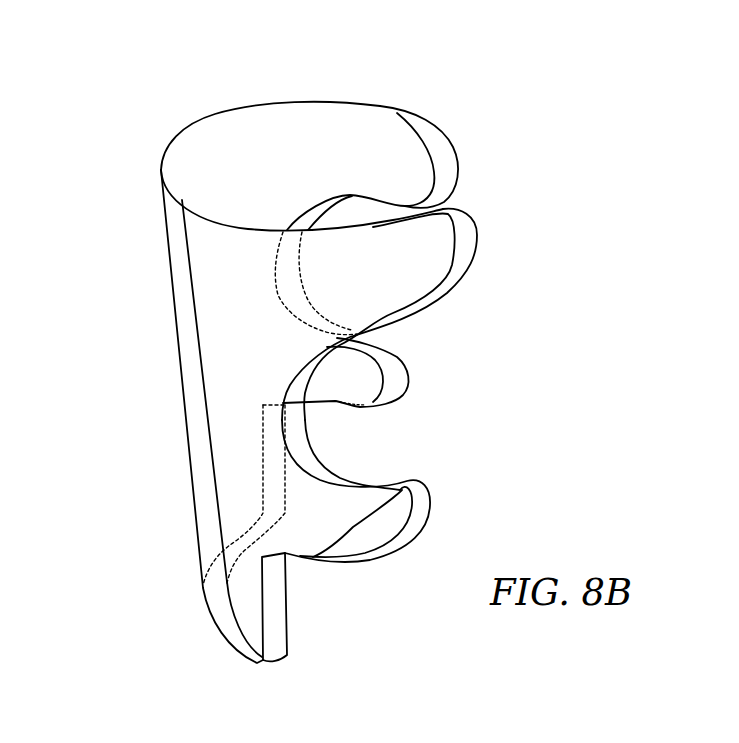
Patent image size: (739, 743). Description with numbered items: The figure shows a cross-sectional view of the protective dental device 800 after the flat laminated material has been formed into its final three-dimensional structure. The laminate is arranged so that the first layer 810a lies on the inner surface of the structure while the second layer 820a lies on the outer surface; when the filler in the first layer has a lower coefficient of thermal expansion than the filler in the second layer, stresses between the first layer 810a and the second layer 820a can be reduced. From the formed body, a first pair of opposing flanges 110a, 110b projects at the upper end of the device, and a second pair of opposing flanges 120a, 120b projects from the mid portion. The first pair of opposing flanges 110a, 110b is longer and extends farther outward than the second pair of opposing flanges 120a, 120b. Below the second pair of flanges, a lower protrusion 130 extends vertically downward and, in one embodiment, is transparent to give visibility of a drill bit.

The protective dental device 800 is at (247, 72).
The first layer 810a is at (255, 142).
The second layer 820a is at (212, 270).
The first opposing flange 110a is at (395, 157).
The first opposing flange 110b is at (432, 240).
The second opposing flange 120a is at (360, 388).
The second opposing flange 120b is at (392, 508).
The lower protrusion 130 is at (252, 625).